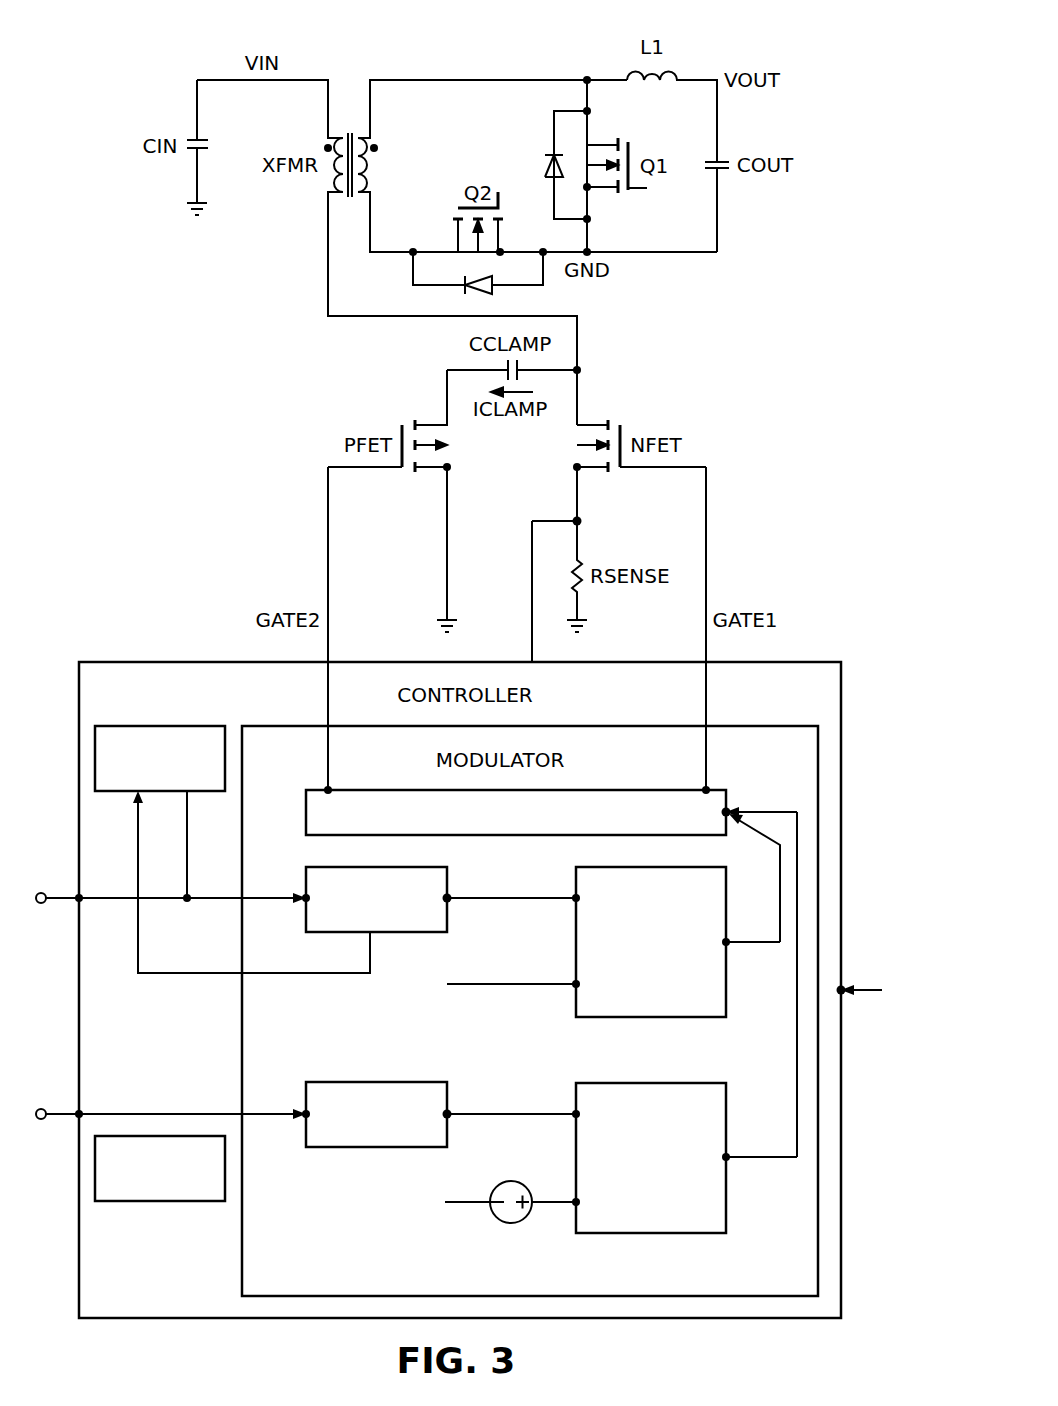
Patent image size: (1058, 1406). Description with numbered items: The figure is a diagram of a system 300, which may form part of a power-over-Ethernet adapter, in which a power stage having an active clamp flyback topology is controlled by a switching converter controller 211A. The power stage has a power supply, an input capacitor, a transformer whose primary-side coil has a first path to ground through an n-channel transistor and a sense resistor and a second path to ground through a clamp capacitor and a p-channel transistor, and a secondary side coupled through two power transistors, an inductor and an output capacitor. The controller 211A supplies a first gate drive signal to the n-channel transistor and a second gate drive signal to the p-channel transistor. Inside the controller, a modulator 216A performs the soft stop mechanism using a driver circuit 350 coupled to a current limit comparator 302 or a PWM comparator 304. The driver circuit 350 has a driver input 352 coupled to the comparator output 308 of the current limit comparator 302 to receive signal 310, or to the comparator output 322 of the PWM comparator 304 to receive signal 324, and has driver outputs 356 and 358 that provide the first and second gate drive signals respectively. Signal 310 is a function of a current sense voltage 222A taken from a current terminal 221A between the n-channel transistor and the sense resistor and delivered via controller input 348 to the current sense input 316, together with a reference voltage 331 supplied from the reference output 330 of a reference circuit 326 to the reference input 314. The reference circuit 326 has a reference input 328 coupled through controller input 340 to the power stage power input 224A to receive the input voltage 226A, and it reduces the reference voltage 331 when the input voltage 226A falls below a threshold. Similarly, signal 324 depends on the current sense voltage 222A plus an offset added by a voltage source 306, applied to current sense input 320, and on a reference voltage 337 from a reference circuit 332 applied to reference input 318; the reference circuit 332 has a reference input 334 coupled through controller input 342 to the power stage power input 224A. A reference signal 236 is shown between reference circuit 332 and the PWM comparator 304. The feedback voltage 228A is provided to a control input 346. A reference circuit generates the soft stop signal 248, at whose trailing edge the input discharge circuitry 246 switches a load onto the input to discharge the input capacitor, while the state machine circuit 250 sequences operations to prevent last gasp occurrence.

The system 300 is at (142, 56).
The switching converter controller 211A is at (819, 656).
The modulator 216A is at (288, 720).
The current terminal 221A is at (581, 520).
The current sense voltage 222A is at (557, 517).
The power stage power input 224A is at (41, 905).
The VIN 226A is at (288, 905).
The VFB 228A is at (866, 993).
The reference signal 236 is at (452, 1109).
The input discharge circuitry 246 is at (150, 725).
The SOFTSTOP signal 248 is at (316, 976).
The state machine circuit 250 is at (160, 1203).
The current limit comparator 302 is at (652, 1019).
The PWM comparator 304 is at (653, 1235).
The voltage source 306 is at (520, 1182).
The comparator output 308 is at (730, 948).
The signal 310 is at (748, 939).
The reference input 314 is at (573, 907).
The current sense input 316 is at (573, 993).
The reference input 318 is at (573, 1109).
The current sense input 320 is at (573, 1210).
The comparator output 322 is at (730, 1153).
The signal 324 is at (765, 1160).
The reference circuit 326 is at (400, 934).
The reference input 328 is at (303, 893).
The reference output 330 is at (452, 903).
The reference voltage 331 is at (527, 896).
The reference circuit 332 is at (378, 1149).
The reference input 334 is at (303, 1109).
The reference voltage 337 is at (495, 1118).
The controller input 340 is at (76, 893).
The controller input 342 is at (76, 1109).
The control input 346 is at (846, 985).
The controller input 348 is at (528, 652).
The driver circuit 350 is at (500, 837).
The driver input 352 is at (732, 808).
The driver output 356 is at (703, 789).
The driver output 358 is at (325, 789).